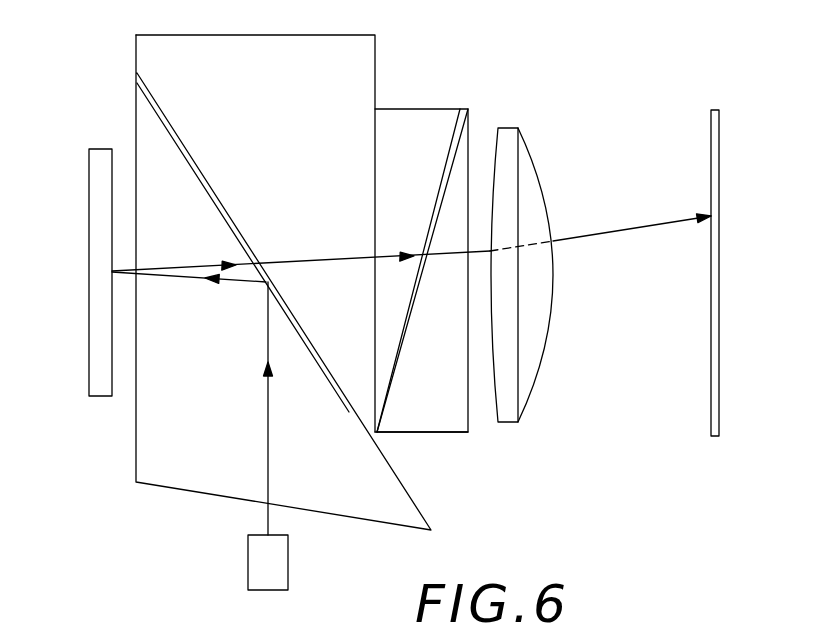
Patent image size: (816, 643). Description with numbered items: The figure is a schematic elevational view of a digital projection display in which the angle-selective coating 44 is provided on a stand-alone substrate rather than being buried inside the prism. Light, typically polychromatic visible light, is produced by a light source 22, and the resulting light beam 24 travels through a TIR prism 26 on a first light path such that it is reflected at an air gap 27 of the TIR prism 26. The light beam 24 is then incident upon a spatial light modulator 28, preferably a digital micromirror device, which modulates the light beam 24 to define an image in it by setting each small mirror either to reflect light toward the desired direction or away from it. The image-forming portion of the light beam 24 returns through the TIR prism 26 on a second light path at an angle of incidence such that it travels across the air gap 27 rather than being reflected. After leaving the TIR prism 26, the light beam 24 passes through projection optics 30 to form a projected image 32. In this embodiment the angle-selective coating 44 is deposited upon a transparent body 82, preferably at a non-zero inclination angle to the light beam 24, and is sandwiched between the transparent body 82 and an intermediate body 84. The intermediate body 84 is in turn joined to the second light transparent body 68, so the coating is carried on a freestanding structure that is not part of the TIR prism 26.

The light source 22 is at (289, 573).
The light beam 24 is at (600, 233).
The TIR prism 26 is at (167, 497).
The air gap 27 is at (349, 412).
The spatial light modulator 28 is at (88, 348).
The projection optics 30 is at (509, 422).
The projected image 32 is at (708, 218).
The angle-selective coating 44 is at (432, 232).
The second light transparent body 68 is at (226, 58).
The transparent body 82 is at (449, 432).
The intermediate body 84 is at (412, 127).